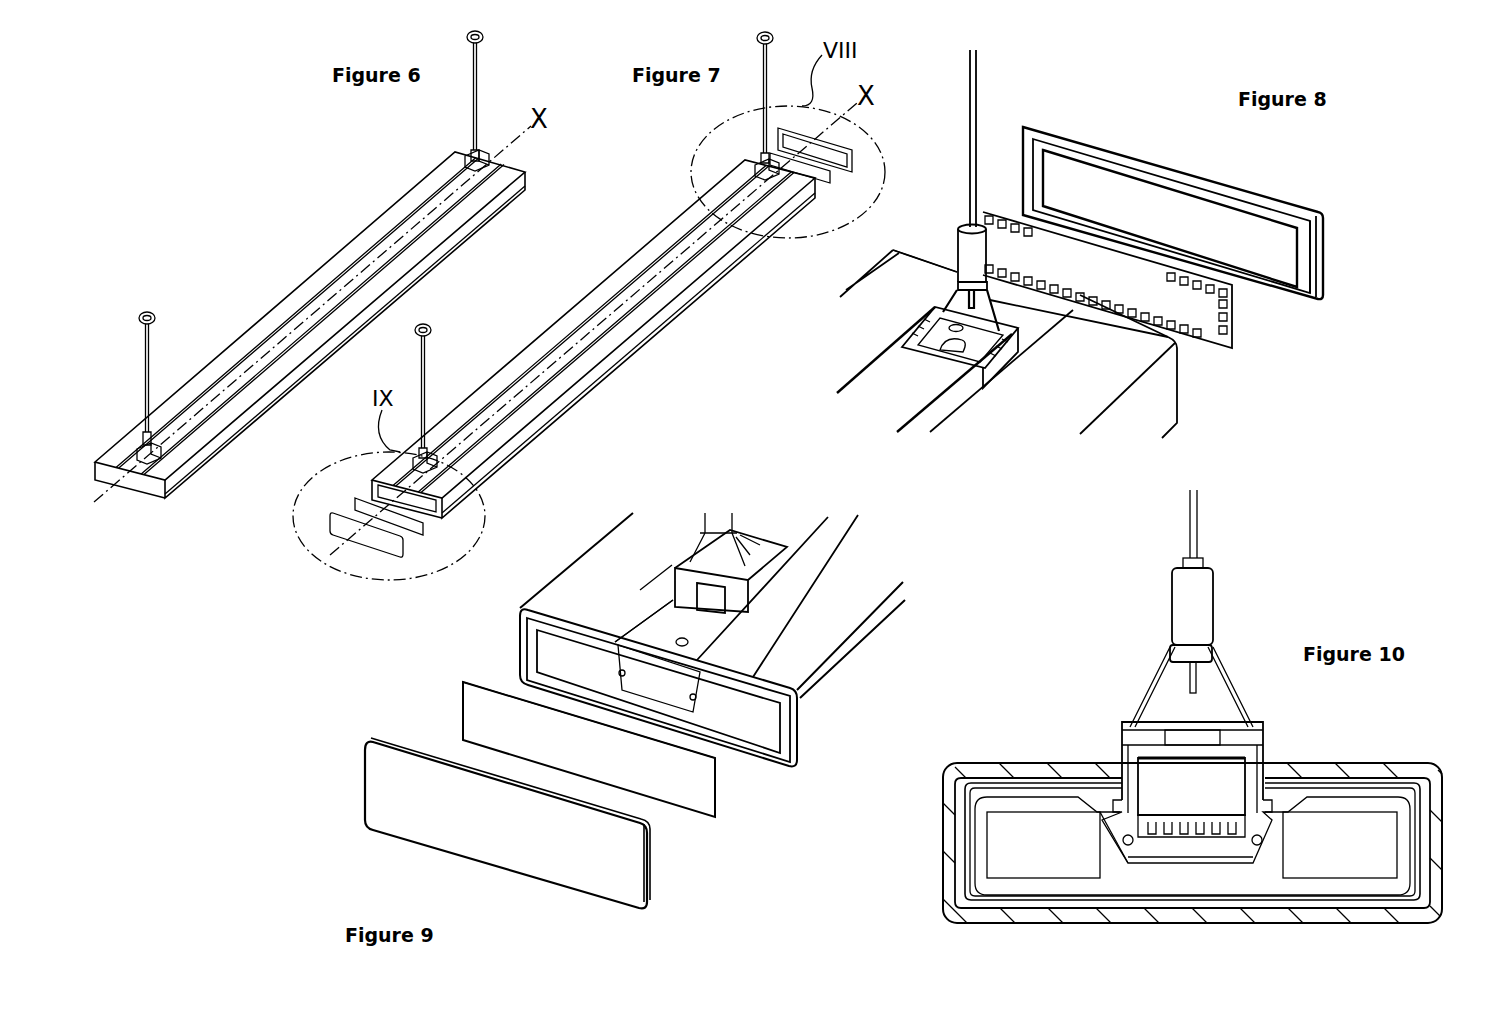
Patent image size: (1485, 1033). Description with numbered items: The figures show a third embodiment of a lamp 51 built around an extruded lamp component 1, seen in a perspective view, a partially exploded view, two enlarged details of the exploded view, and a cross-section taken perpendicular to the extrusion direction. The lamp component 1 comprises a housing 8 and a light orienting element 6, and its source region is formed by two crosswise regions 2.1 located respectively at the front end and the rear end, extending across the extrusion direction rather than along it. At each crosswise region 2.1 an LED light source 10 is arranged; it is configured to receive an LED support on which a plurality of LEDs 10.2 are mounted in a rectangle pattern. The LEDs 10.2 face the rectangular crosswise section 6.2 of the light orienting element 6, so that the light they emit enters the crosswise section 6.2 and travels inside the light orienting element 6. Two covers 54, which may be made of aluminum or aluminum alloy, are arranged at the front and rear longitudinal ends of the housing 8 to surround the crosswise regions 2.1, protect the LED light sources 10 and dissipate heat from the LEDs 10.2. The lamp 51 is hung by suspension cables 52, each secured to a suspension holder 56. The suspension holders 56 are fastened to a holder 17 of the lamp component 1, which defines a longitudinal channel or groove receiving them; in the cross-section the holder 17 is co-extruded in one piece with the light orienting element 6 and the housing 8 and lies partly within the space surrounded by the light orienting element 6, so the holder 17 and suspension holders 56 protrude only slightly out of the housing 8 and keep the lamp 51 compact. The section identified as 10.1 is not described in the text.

In FIG. 6, the lamp component 1 is at (300, 290).
In FIG. 7, the lamp component 1 is at (602, 312).
In FIG. 8, the lamp component 1 is at (1157, 398).
In FIG. 9, the lamp component 1 is at (815, 728).
In FIG. 10, the lamp component 1 is at (1392, 740).
In FIG. 8, the crosswise region 2.1 is at (937, 252).
In FIG. 9, the crosswise region 2.1 is at (575, 663).
In FIG. 10, the light orienting element 6 is at (1400, 855).
In FIG. 9, the crosswise section 6.2 is at (773, 725).
In FIG. 10, the housing 8 is at (1027, 773).
In FIG. 7, the LED light source 10 is at (592, 344).
In FIG. 8, the LED light source 10 is at (1316, 328).
In FIG. 9, the LED light source 10 is at (694, 787).
In FIG. 8, the circuit board section 10.1 is at (1190, 347).
In FIG. 9, the circuit board section 10.1 is at (678, 797).
In FIG. 8, the LED 10.2 is at (1237, 333).
In FIG. 10, the holder 17 is at (1117, 850).
In FIG. 6, the lamp 51 is at (345, 173).
In FIG. 7, the lamp 51 is at (656, 193).
In FIG. 10, the lamp 51 is at (1283, 702).
In FIG. 6, the suspension cable 52 is at (150, 352).
In FIG. 7, the suspension cable 52 is at (428, 373).
In FIG. 8, the suspension cable 52 is at (978, 85).
In FIG. 10, the suspension cable 52 is at (1198, 520).
In FIG. 7, the cover 54 is at (591, 342).
In FIG. 8, the cover 54 is at (1270, 195).
In FIG. 9, the cover 54 is at (412, 812).
In FIG. 8, the suspension holder 56 is at (978, 333).
In FIG. 9, the suspension holder 56 is at (738, 602).
In FIG. 10, the suspension holder 56 is at (1237, 748).